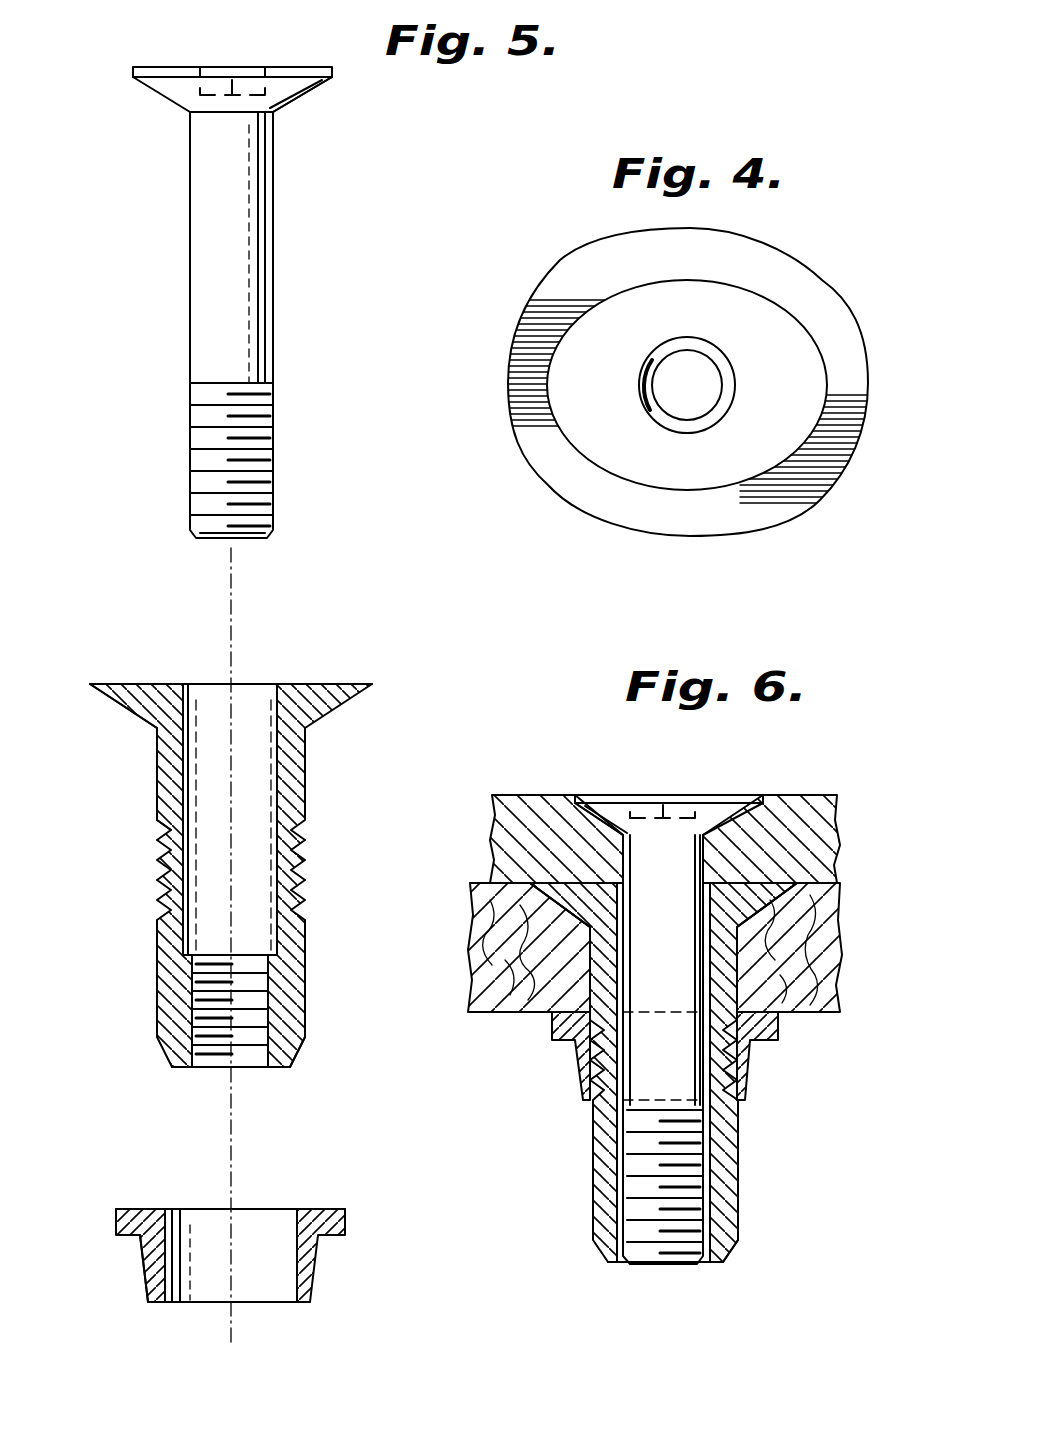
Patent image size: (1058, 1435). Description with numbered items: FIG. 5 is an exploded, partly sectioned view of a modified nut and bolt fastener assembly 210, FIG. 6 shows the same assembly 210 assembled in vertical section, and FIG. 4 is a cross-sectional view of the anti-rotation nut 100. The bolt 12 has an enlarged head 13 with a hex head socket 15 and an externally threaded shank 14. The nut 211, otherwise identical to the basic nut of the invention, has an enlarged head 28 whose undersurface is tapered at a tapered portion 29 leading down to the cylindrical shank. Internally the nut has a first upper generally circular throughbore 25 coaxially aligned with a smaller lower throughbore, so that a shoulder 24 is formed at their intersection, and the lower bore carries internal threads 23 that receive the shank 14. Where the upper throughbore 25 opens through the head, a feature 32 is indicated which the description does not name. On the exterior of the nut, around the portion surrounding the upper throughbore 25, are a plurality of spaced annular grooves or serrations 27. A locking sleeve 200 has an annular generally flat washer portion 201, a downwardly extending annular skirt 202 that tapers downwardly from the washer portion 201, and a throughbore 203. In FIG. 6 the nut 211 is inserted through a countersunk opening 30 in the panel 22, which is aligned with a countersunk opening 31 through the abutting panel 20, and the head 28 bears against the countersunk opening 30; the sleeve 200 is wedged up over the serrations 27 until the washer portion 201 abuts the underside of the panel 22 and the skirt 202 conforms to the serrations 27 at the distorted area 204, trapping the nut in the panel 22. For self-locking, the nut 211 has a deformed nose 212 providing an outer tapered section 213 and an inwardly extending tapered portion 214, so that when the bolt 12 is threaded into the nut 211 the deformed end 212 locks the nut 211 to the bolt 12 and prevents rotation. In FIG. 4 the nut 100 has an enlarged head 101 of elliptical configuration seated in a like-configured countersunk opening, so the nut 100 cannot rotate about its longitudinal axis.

In FIG. 5, the bolt 12 is at (293, 296).
In FIG. 6, the bolt 12 is at (607, 780).
In FIG. 5, the enlarged head 13 is at (282, 100).
In FIG. 6, the enlarged head 13 is at (562, 812).
In FIG. 5, the externally threaded shank 14 is at (215, 442).
In FIG. 6, the externally threaded shank 14 is at (688, 1165).
In FIG. 5, the hex head socket 15 is at (215, 88).
In FIG. 6, the panel 20 is at (800, 822).
In FIG. 6, the panel 22 is at (485, 925).
In FIG. 5, the threads 23 is at (210, 1000).
In FIG. 5, the shoulder 24 is at (272, 962).
In FIG. 5, the first upper internal throughbore 25 is at (283, 803).
In FIG. 5, the annular grooves or serrations 27 is at (162, 847).
In FIG. 5, the enlarged head 28 is at (348, 700).
In FIG. 5, the tapered portion 29 is at (128, 712).
In FIG. 6, the tapered portion 29 is at (560, 897).
In FIG. 6, the countersunk opening 30 is at (757, 897).
In FIG. 6, the countersunk opening 31 is at (722, 800).
In FIG. 4, the insert bore opening 32 is at (705, 408).
In FIG. 5, the insert bore opening 32 is at (250, 715).
In FIG. 4, the nut 100 is at (600, 472).
In FIG. 4, the enlarged head 101 is at (607, 318).
In FIG. 5, the locking sleeve 200 is at (330, 1290).
In FIG. 5, the washer portion 201 is at (130, 1210).
In FIG. 5, the annular skirt 202 is at (140, 1268).
In FIG. 6, the annular skirt 202 is at (577, 1077).
In FIG. 5, the throughbore 203 is at (298, 1228).
In FIG. 6, the distorted area 204 is at (758, 1066).
In FIG. 5, the fastener assembly 210 is at (87, 1310).
In FIG. 6, the fastener assembly 210 is at (566, 1050).
In FIG. 5, the nut 211 is at (308, 1010).
In FIG. 6, the nut 211 is at (744, 1226).
In FIG. 5, the deformed nose 212 is at (278, 1068).
In FIG. 6, the deformed nose 212 is at (712, 1264).
In FIG. 5, the outer tapered section 213 is at (150, 1040).
In FIG. 6, the outer tapered section 213 is at (595, 1245).
In FIG. 5, the inwardly extending tapered portion 214 is at (246, 1072).
In FIG. 6, the inwardly extending tapered portion 214 is at (640, 1266).